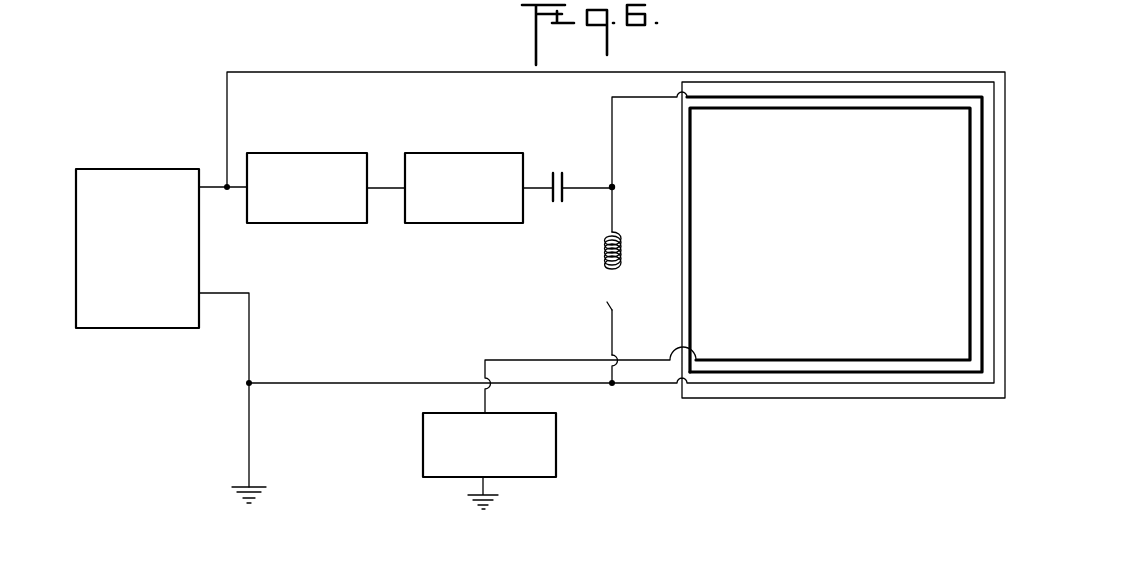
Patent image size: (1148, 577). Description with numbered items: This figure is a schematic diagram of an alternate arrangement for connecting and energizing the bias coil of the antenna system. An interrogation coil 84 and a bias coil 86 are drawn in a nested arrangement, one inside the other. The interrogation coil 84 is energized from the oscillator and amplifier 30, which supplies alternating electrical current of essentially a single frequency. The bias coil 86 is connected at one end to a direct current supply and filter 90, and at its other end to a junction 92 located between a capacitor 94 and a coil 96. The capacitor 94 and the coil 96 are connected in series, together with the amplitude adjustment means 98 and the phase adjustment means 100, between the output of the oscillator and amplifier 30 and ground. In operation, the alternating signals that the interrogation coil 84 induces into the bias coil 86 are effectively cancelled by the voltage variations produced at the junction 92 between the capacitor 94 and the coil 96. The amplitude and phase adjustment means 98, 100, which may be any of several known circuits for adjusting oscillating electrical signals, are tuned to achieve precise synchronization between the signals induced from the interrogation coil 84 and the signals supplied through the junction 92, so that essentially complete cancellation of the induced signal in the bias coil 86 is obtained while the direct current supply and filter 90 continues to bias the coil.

The oscillator and amplifier 30 is at (168, 168).
The amplitude adjustment means 98 is at (351, 152).
The phase adjustment means 100 is at (500, 152).
The capacitor 94 is at (567, 171).
The junction 92 is at (616, 184).
The coil 96 is at (605, 275).
The interrogation coil 84 is at (616, 225).
The bias coil 86 is at (820, 113).
The direct current supply and filter 90 is at (423, 441).